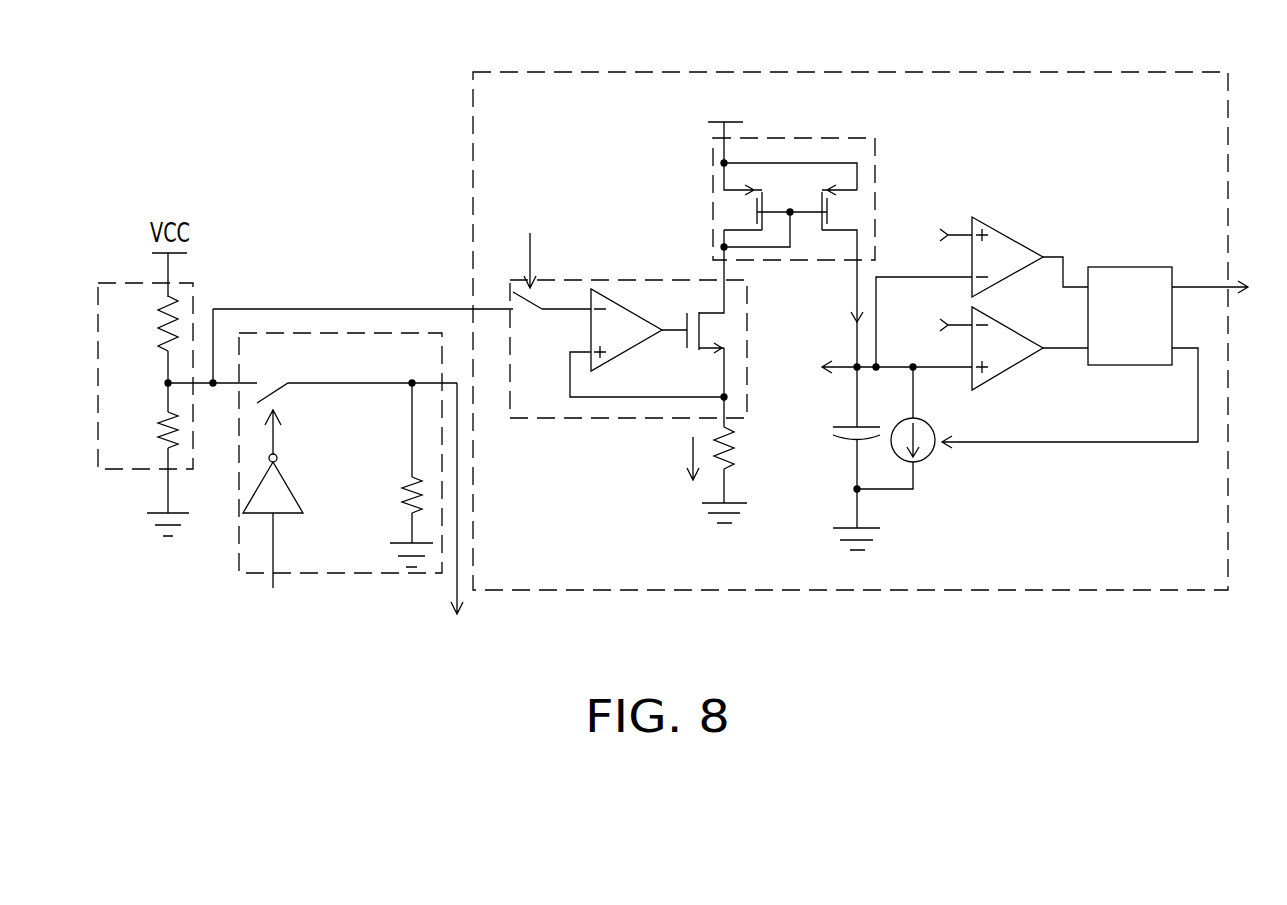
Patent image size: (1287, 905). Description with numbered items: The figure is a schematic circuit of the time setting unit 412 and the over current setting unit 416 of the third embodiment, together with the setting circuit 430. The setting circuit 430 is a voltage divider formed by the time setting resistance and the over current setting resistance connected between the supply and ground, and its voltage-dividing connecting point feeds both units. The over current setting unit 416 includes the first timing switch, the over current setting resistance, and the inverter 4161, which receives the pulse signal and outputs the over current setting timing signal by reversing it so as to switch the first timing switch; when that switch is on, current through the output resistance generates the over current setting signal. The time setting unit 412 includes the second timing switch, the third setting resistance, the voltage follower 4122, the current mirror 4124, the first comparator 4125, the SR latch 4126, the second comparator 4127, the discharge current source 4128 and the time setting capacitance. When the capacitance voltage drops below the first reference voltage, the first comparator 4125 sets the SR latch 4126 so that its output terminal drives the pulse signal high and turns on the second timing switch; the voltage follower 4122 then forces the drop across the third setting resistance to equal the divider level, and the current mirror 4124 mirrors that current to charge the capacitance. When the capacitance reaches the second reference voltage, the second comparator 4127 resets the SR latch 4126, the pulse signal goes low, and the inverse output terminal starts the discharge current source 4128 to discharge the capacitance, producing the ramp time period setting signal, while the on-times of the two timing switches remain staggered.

The time setting unit 412 is at (476, 115).
The voltage follower 4122 is at (694, 279).
The current mirror 4124 is at (872, 152).
The first comparator 4125 is at (1002, 237).
The SR latch 4126 is at (1112, 270).
The second comparator 4127 is at (998, 369).
The discharge current source 4128 is at (928, 456).
The over current setting unit 416 is at (322, 479).
The inverter 4161 is at (285, 494).
The setting circuit 430 is at (149, 283).